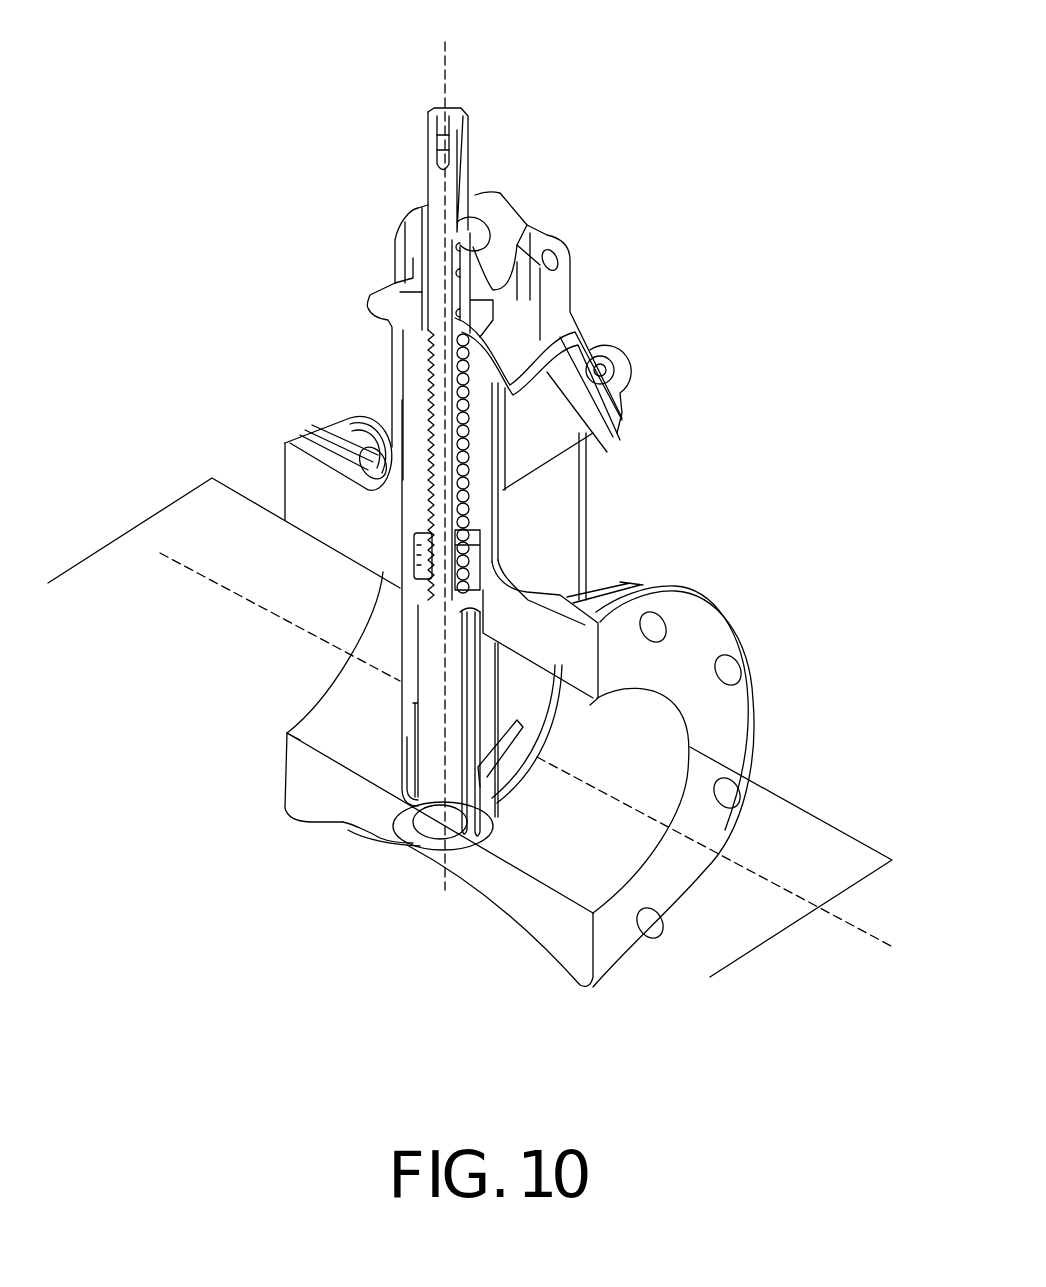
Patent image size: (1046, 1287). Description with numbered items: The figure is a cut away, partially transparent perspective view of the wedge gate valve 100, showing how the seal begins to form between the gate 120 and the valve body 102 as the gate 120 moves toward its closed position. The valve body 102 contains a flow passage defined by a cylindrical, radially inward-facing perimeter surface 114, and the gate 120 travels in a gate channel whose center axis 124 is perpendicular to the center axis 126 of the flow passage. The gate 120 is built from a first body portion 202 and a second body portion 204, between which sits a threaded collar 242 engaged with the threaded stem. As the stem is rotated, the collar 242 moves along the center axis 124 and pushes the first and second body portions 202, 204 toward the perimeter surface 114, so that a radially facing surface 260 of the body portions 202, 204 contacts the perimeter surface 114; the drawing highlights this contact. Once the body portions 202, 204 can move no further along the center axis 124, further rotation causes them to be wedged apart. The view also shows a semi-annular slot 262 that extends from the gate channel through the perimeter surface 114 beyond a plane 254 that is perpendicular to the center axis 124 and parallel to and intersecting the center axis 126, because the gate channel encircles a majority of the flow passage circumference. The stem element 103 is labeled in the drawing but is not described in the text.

The wedge gate valve 100 is at (375, 890).
The valve body 102 is at (338, 685).
The stem 103 is at (470, 188).
The perimeter surface 114 is at (560, 877).
The gate 120 is at (487, 810).
The center axis 124 is at (440, 82).
The center axis 126 is at (868, 930).
The first body portion 202 is at (398, 630).
The second body portion 204 is at (485, 670).
The threaded collar 242 is at (414, 550).
The plane 254 is at (828, 818).
The radially facing surface 260 is at (375, 847).
The semi-annular slot 262 is at (545, 711).